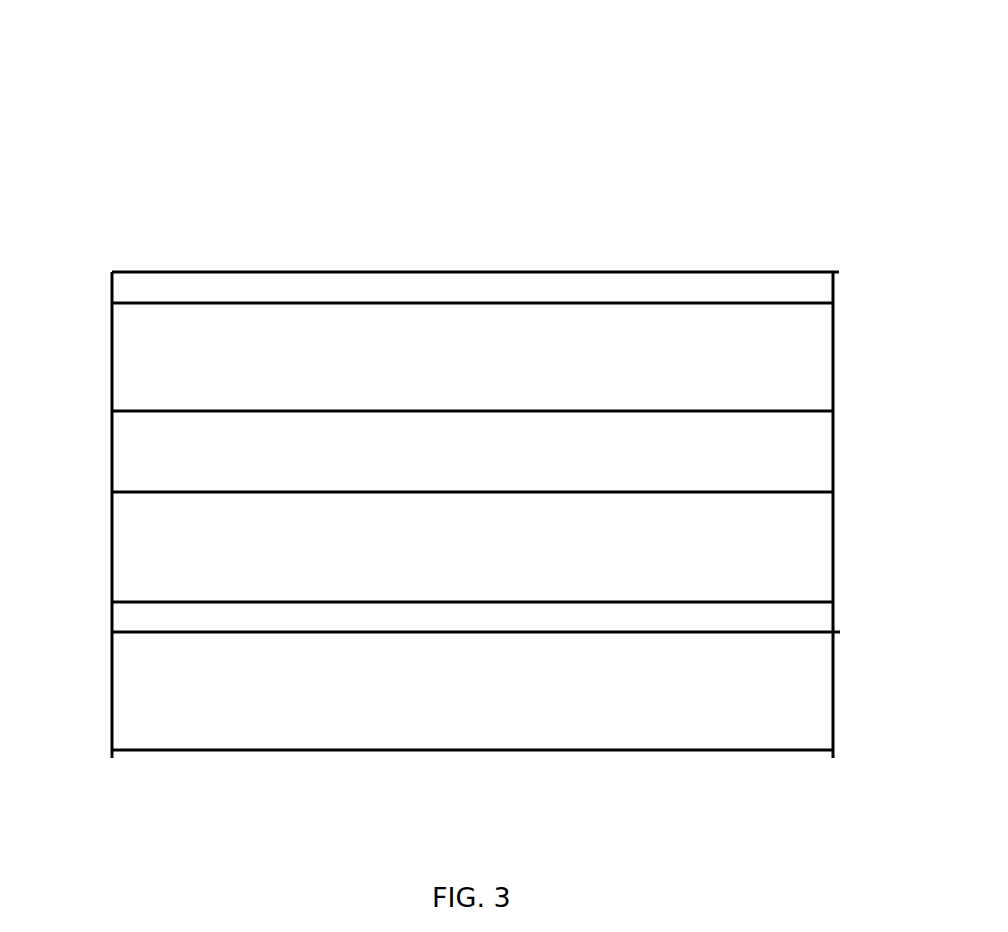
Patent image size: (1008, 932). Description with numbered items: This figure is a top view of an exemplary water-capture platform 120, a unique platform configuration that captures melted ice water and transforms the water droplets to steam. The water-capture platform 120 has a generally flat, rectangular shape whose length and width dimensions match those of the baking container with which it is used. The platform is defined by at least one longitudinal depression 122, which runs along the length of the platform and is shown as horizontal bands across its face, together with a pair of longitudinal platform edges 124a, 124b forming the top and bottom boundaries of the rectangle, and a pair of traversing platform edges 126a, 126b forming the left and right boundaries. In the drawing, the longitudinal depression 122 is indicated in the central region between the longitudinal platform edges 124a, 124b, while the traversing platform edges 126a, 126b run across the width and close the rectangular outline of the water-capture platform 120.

The water-capture platform 120 is at (126, 78).
The longitudinal depression 122 is at (800, 545).
The longitudinal platform edge 124a is at (505, 272).
The longitudinal platform edge 124b is at (455, 750).
The traversing platform edge 126a is at (115, 373).
The traversing platform edge 126b is at (831, 363).